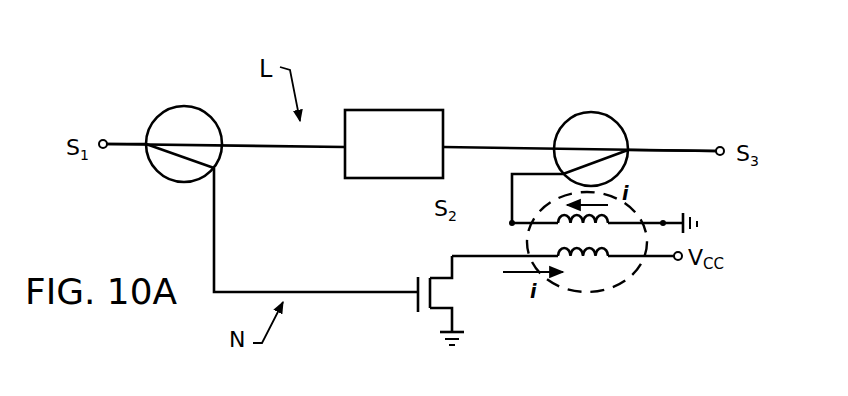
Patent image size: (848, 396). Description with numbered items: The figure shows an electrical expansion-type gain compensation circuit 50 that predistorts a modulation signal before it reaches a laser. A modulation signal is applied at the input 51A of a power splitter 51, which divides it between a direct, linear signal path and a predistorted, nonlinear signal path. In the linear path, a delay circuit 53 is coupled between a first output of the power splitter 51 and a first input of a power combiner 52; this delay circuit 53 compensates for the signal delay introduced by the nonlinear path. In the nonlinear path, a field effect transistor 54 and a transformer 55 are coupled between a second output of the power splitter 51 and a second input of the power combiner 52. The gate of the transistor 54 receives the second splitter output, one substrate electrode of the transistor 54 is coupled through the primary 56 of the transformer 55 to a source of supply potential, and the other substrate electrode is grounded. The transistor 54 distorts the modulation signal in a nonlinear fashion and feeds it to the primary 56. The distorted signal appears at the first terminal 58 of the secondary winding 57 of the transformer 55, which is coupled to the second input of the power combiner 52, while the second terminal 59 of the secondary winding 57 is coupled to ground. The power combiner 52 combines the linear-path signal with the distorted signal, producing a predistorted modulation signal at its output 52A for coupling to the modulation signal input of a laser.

The electrical compensation circuit 50 is at (500, 70).
The power splitter 51 is at (184, 105).
The input to the power splitter 51A is at (128, 146).
The power combiner 52 is at (588, 113).
The output of the power combiner 52A is at (647, 150).
The delay circuit 53 is at (408, 110).
The field effect transistor 54 is at (417, 322).
The transformer 55 is at (627, 282).
The primary 56 is at (588, 257).
The secondary winding 57 is at (608, 221).
The first terminal of the secondary winding 58 is at (512, 223).
The second terminal of the secondary winding 59 is at (663, 225).